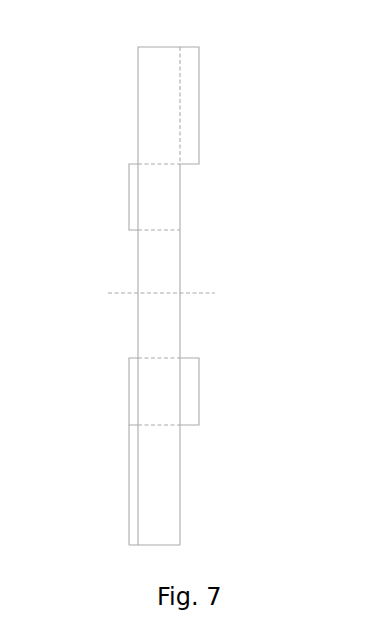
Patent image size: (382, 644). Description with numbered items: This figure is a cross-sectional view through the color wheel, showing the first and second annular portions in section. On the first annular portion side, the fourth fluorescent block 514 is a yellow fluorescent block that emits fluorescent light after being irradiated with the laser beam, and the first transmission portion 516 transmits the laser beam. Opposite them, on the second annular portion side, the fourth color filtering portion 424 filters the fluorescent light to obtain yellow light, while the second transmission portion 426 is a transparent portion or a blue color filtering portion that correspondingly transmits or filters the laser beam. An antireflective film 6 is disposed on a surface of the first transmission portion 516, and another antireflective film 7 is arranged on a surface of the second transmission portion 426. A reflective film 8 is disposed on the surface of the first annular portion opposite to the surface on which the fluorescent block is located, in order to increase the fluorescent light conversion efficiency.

The fourth color filtering portion 424 is at (188, 103).
The first transmission portion 516 is at (163, 211).
The antireflective film 6 is at (129, 197).
The reflective film 8 is at (129, 392).
The fourth fluorescent block 514 is at (190, 392).
The antireflective film 7 is at (130, 490).
The second transmission portion 426 is at (165, 493).